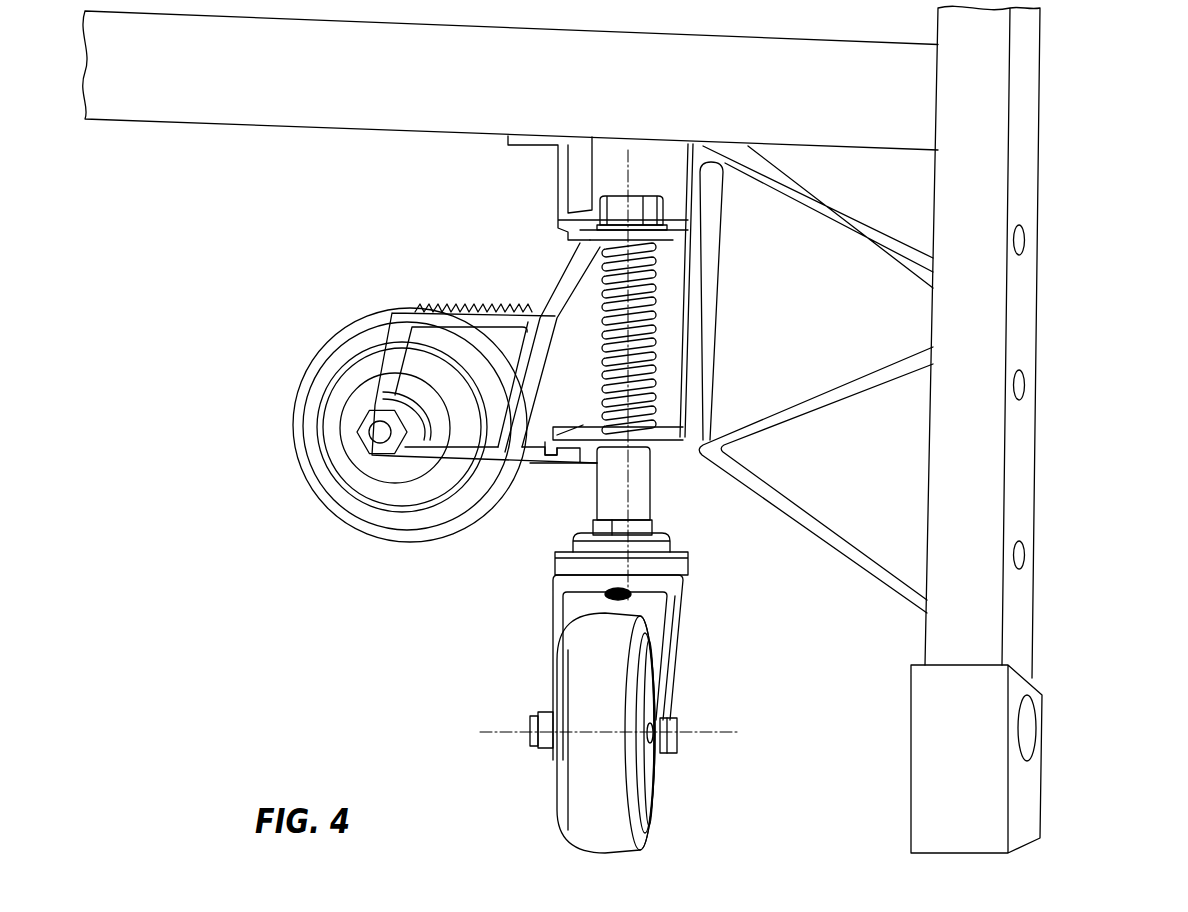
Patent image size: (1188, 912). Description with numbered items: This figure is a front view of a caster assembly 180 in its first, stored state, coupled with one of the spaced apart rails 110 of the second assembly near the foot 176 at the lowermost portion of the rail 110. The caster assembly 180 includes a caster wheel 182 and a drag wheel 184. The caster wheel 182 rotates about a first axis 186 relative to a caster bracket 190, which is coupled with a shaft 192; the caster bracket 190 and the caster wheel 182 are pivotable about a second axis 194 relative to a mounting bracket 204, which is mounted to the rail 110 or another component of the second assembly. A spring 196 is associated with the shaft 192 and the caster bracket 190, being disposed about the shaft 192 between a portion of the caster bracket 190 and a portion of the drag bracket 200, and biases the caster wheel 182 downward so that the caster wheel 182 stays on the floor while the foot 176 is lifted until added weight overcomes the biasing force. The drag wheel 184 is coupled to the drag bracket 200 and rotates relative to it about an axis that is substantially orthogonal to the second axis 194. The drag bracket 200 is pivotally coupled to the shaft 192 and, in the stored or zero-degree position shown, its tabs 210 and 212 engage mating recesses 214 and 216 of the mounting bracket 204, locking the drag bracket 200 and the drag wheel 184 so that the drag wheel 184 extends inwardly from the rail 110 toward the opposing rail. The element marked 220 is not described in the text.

The rail 110 is at (1025, 326).
The foot 176 is at (1042, 742).
The caster assembly 180 is at (297, 568).
The caster wheel 182 is at (580, 798).
The drag wheel 184 is at (320, 363).
The first axis 186 is at (497, 727).
The caster bracket 190 is at (556, 590).
The shaft 192 is at (550, 316).
The second axis 194 is at (633, 185).
The spring 196 is at (606, 328).
The drag bracket 200 is at (478, 302).
The mounting bracket 204 is at (852, 560).
The tab 210 is at (658, 242).
The tab 212 is at (596, 455).
The recess 214 is at (652, 221).
The recess 216 is at (590, 428).
The stem 220 is at (640, 485).